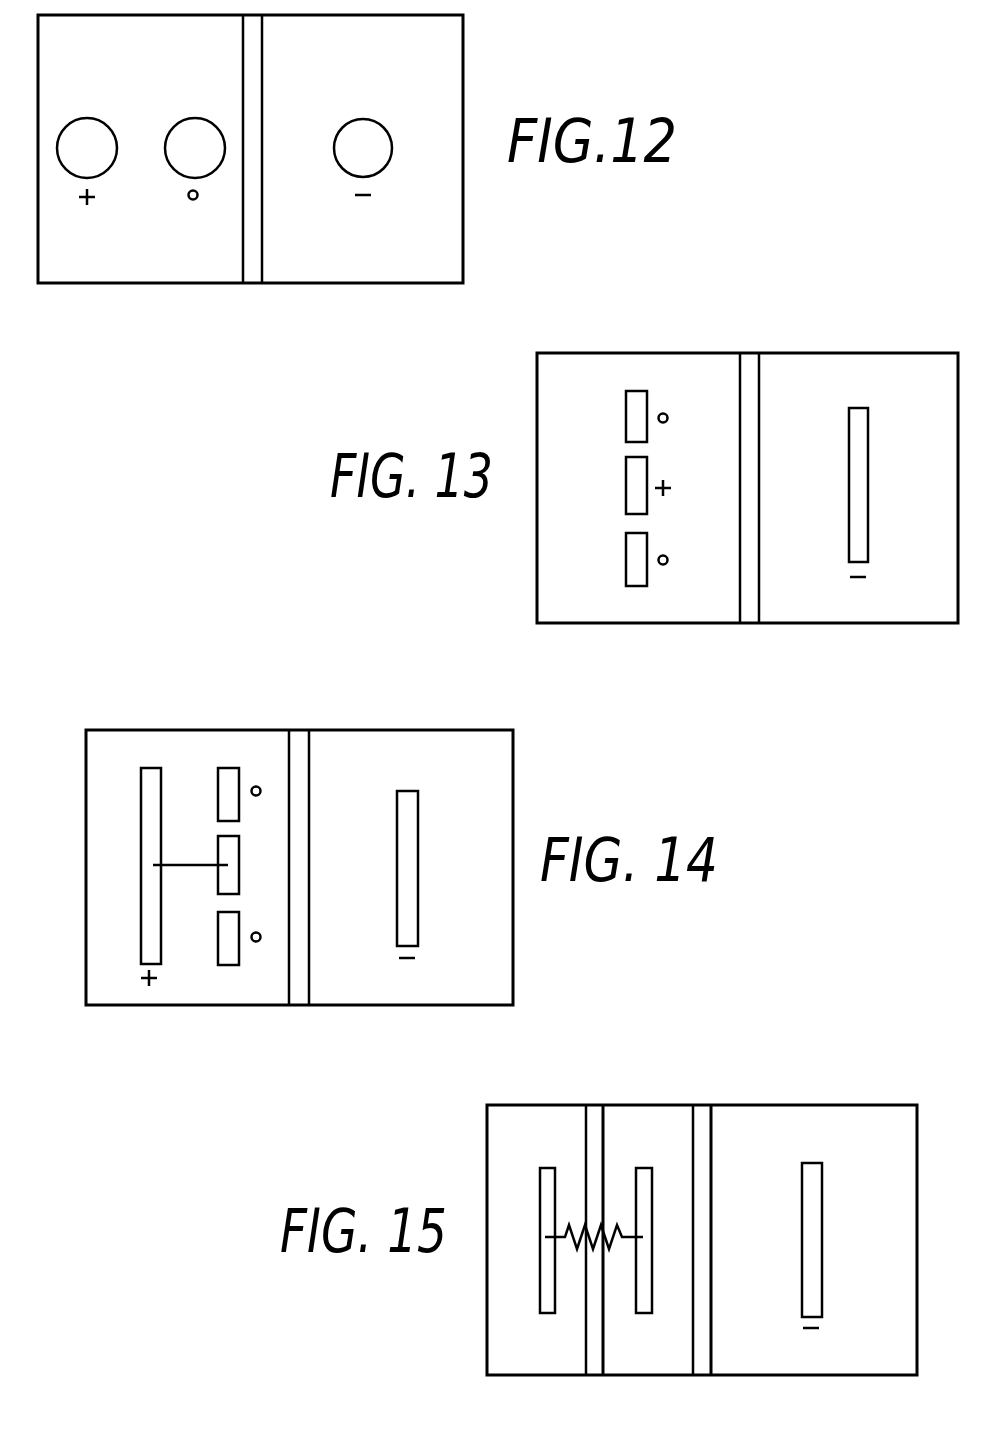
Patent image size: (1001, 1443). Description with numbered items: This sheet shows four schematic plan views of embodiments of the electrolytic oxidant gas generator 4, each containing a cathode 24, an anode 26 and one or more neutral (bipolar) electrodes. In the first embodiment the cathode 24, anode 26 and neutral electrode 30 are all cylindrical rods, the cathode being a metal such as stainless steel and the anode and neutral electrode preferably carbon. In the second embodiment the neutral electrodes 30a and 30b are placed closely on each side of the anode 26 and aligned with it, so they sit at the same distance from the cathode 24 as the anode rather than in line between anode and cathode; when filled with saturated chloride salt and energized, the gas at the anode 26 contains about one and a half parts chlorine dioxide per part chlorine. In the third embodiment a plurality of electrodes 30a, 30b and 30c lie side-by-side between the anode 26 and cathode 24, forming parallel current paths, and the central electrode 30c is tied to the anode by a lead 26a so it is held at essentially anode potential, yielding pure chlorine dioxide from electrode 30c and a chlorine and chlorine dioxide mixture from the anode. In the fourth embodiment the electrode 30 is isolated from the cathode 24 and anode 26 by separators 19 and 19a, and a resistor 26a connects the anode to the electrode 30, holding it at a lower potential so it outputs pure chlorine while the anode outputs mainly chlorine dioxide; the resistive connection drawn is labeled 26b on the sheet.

In FIG. 12, the oxidant gas generator 4 is at (140, 294).
In FIG. 13, the oxidant gas generator 4 is at (679, 640).
In FIG. 14, the oxidant gas generator 4 is at (250, 1055).
In FIG. 15, the oxidant gas generator 4 is at (687, 1090).
In FIG. 12, the cathode 24 is at (392, 160).
In FIG. 13, the cathode 24 is at (868, 500).
In FIG. 14, the cathode 24 is at (418, 868).
In FIG. 15, the cathode 24 is at (822, 1243).
In FIG. 12, the anode 26 is at (111, 168).
In FIG. 13, the anode 26 is at (626, 490).
In FIG. 14, the anode 26 is at (141, 900).
In FIG. 15, the anode 26 is at (545, 1175).
In FIG. 12, the neutral (bipolar) electrode 30 is at (197, 118).
In FIG. 15, the neutral (bipolar) electrode 30 is at (645, 1175).
In FIG. 14, the lead 26a is at (185, 868).
In FIG. 15, the resistive connecting lead 26b is at (573, 1240).
In FIG. 13, the neutral (bipolar) electrode 30a is at (637, 391).
In FIG. 14, the neutral (bipolar) electrode 30a is at (239, 768).
In FIG. 13, the neutral (bipolar) electrode 30b is at (637, 586).
In FIG. 14, the neutral (bipolar) electrode 30b is at (236, 965).
In FIG. 14, the central electrode 30c is at (239, 872).
In FIG. 15, the separator 19 is at (700, 1365).
In FIG. 15, the separator 19a is at (593, 1365).